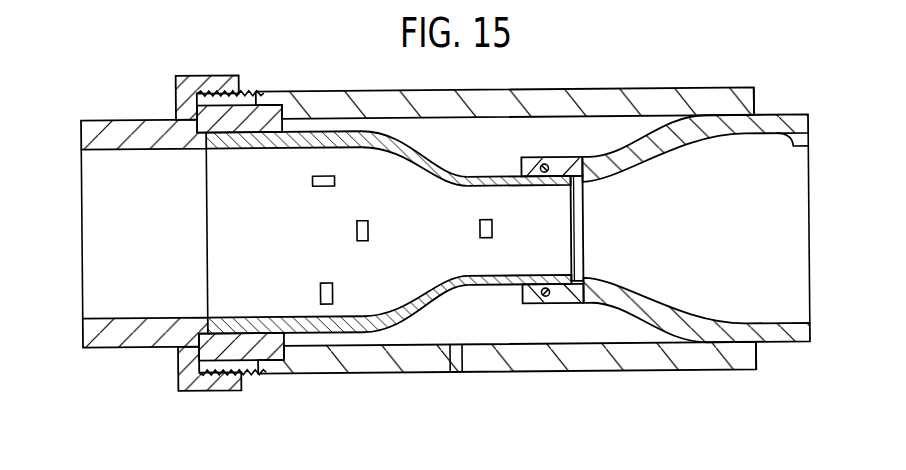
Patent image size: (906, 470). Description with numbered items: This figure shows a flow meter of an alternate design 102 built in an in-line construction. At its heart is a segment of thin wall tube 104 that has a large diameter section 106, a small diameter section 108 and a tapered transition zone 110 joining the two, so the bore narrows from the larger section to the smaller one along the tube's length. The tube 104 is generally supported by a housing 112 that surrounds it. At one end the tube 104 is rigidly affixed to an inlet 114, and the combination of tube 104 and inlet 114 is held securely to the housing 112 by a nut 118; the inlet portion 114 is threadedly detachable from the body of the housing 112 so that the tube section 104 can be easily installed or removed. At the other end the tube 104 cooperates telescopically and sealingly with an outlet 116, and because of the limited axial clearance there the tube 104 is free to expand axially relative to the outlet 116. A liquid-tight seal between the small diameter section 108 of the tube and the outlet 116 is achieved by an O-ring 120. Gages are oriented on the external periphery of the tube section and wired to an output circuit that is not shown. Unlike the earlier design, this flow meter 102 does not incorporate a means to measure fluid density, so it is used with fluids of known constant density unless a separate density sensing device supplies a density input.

The flow meter of an alternate design 102 is at (575, 72).
The thin wall tube 104 is at (386, 126).
The large diameter section 106 is at (286, 90).
The small diameter section 108 is at (490, 177).
The tapered transition zone 110 is at (418, 148).
The housing 112 is at (694, 91).
The inlet 114 is at (97, 153).
The outlet 116 is at (798, 140).
The nut 118 is at (210, 73).
The O-ring 120 is at (545, 296).